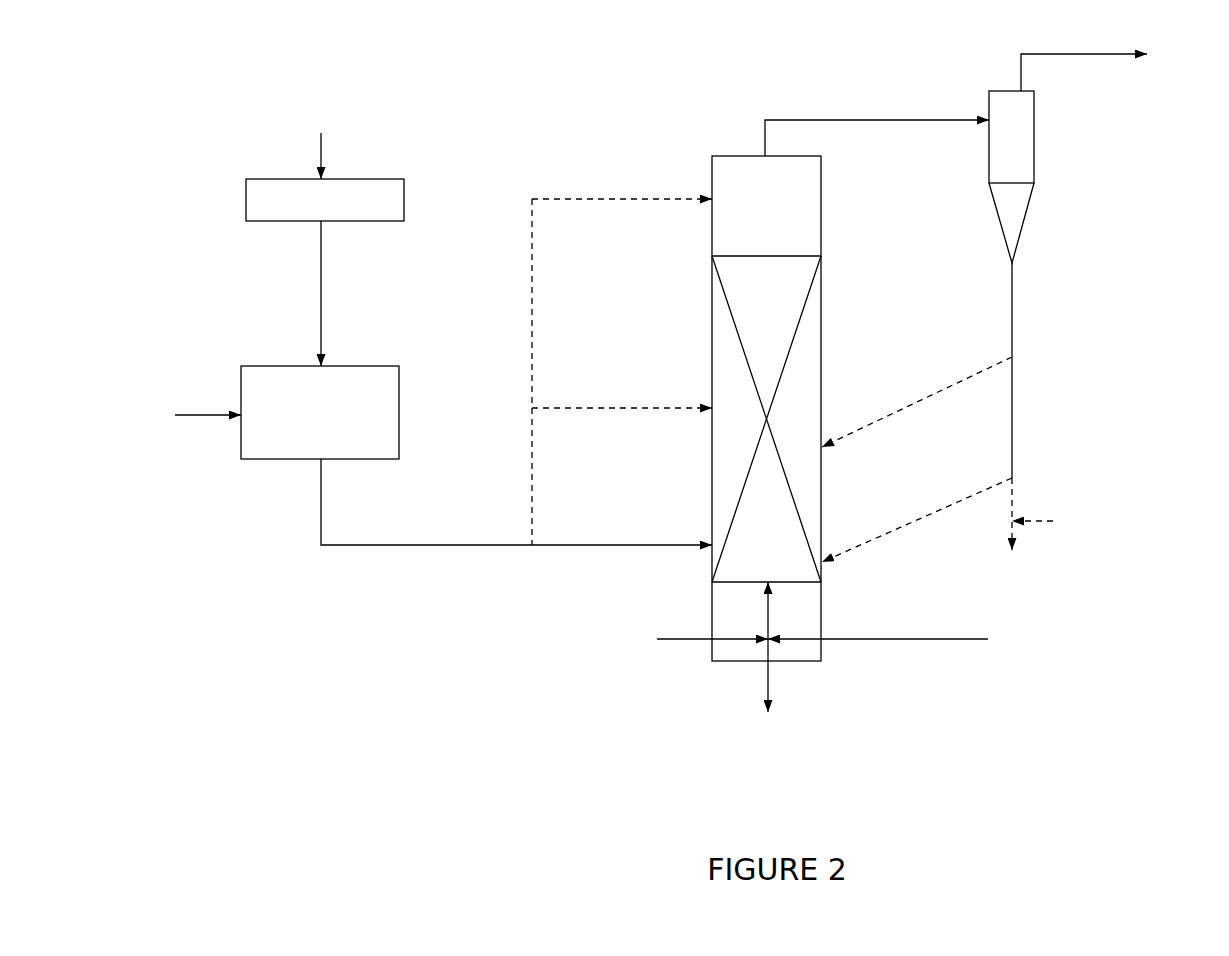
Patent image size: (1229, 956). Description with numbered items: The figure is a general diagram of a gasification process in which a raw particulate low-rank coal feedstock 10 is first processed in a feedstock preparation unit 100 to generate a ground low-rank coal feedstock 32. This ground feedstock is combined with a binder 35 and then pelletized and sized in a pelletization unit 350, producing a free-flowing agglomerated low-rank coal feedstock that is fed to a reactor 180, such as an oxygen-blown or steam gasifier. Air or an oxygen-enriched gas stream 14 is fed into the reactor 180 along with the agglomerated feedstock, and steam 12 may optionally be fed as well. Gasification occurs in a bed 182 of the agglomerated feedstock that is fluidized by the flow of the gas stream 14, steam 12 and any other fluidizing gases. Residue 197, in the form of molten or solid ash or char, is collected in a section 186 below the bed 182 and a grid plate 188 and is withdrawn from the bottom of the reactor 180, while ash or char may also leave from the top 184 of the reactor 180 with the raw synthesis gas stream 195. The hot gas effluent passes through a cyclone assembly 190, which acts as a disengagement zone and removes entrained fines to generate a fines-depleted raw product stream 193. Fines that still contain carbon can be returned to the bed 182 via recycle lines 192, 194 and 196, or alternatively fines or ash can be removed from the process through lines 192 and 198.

The raw particulate low-rank coal feedstock 10 is at (319, 137).
The feedstock preparation unit 100 is at (325, 200).
The ground low-rank coal feedstock 32 is at (321, 297).
The pelletization unit 350 is at (320, 412).
The binder 35 is at (186, 415).
The reactor 180 is at (739, 155).
The top of reactor 184 is at (726, 183).
The bed 182 is at (732, 348).
The section below bed 186 is at (731, 622).
The grid plate 188 is at (822, 583).
The residue 197 is at (773, 703).
The air or oxygen-enriched gas stream 14 is at (690, 639).
The steam 12 is at (899, 639).
The raw synthesis gas stream 195 is at (838, 118).
The cyclone assembly 190 is at (1034, 165).
The fines-depleted raw product stream 193 is at (1110, 68).
The recycle line 192 is at (1012, 323).
The recycle line 194 is at (992, 363).
The recycle line 196 is at (928, 520).
The fines removal line 198 is at (1060, 514).